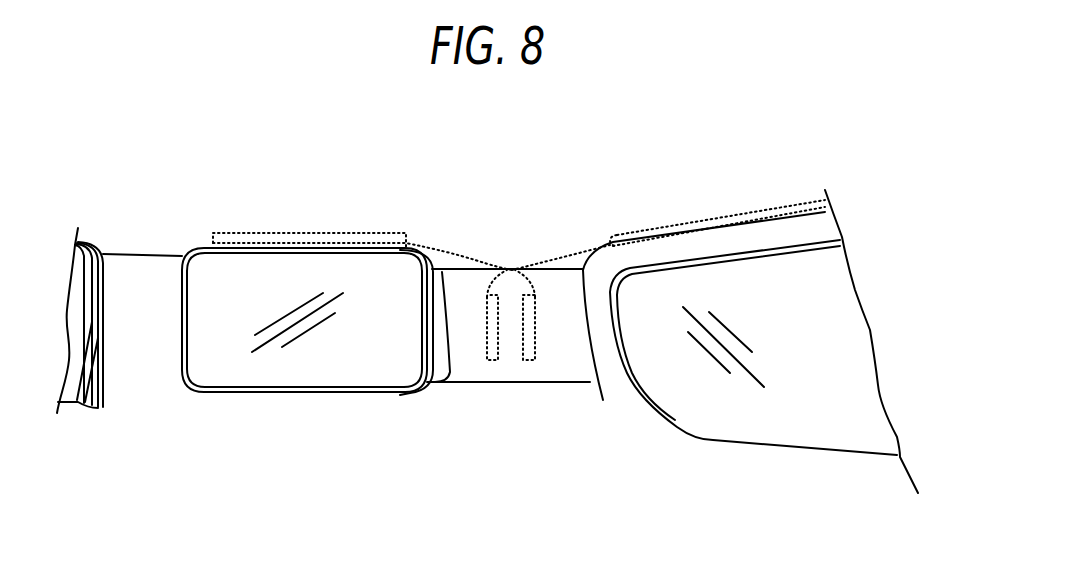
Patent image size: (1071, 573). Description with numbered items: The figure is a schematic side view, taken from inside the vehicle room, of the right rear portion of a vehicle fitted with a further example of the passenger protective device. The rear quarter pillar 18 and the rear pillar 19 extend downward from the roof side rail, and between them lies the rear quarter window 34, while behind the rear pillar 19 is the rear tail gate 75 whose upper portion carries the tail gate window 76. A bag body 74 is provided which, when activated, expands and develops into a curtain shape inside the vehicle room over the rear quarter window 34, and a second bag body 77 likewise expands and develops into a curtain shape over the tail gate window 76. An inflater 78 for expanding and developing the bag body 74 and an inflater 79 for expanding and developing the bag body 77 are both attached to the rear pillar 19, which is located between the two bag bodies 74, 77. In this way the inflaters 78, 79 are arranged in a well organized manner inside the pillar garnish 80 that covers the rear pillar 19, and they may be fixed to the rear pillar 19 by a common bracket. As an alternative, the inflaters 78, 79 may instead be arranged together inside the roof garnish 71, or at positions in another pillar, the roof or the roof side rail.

The rear quarter pillar 18 is at (150, 443).
The rear pillar 19 is at (518, 433).
The rear quarter window 34 is at (298, 408).
The roof garnish 71 is at (374, 447).
The bag body 74 is at (310, 242).
The rear tail gate 75 is at (893, 203).
The tail gate window 76 is at (900, 297).
The bag body 77 is at (712, 220).
The inflater 78 is at (573, 423).
The inflater 79 is at (463, 410).
The pillar garnish 80 is at (555, 287).